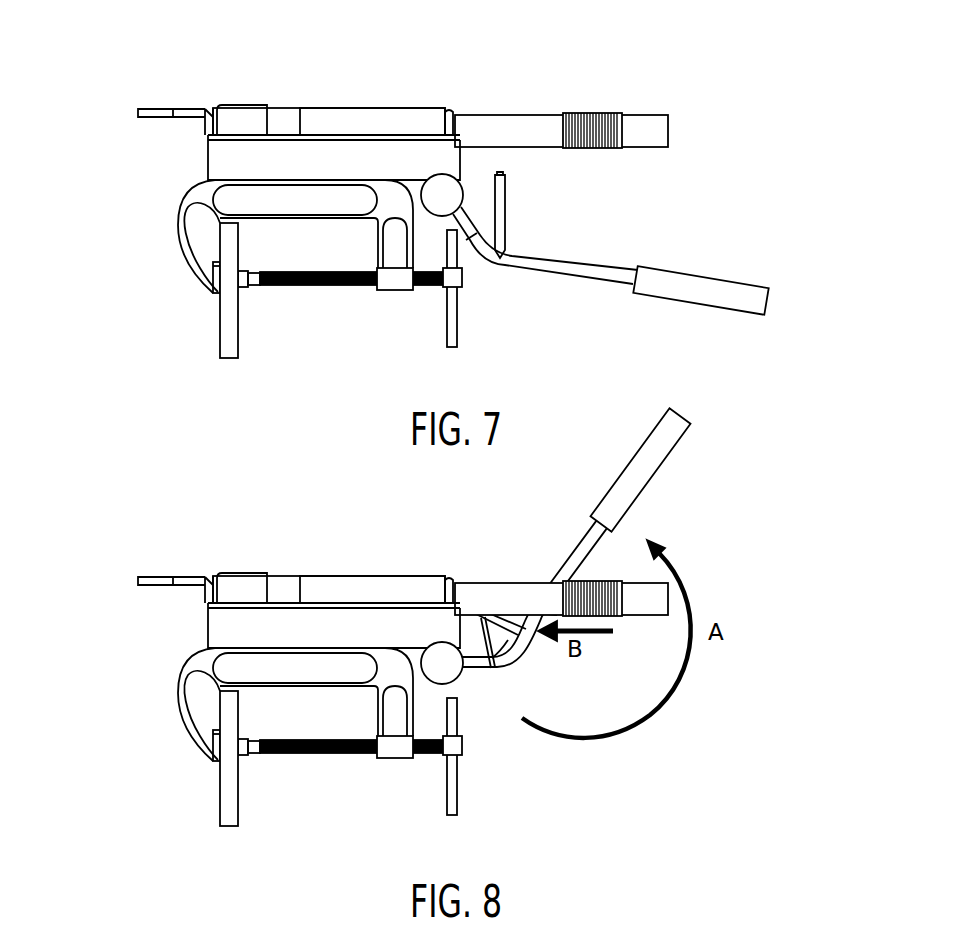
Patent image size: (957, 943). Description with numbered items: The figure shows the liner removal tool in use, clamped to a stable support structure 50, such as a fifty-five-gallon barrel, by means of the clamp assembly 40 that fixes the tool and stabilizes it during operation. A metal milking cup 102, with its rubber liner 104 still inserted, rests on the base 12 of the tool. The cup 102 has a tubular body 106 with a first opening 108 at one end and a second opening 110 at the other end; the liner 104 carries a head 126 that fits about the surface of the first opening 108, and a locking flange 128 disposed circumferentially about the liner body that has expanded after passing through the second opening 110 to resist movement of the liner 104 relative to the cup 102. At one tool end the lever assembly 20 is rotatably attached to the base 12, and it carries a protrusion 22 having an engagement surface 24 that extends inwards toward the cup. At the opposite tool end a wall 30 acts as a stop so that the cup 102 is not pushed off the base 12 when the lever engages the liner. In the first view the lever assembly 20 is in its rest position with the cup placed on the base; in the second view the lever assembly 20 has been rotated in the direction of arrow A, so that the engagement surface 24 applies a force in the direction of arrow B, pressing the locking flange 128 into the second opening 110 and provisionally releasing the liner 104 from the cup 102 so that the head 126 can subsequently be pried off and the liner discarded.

In FIG. 7, the base 12 is at (228, 157).
In FIG. 8, the base 12 is at (290, 641).
In FIG. 7, the lever assembly 20 is at (760, 270).
In FIG. 8, the lever assembly 20 is at (692, 480).
In FIG. 7, the protrusion 22 is at (507, 222).
In FIG. 8, the protrusion 22 is at (496, 661).
In FIG. 7, the engagement surface 24 is at (507, 177).
In FIG. 7, the wall 30 is at (210, 110).
In FIG. 8, the wall 30 is at (175, 549).
In FIG. 7, the clamp assembly 40 is at (380, 316).
In FIG. 8, the clamp assembly 40 is at (320, 759).
In FIG. 7, the support structure 50 is at (225, 354).
In FIG. 8, the support structure 50 is at (175, 767).
In FIG. 7, the milking cup 102 is at (418, 115).
In FIG. 8, the milking cup 102 is at (372, 558).
In FIG. 7, the rubber liner 104 is at (455, 115).
In FIG. 8, the rubber liner 104 is at (561, 572).
In FIG. 7, the tubular body 106 is at (355, 117).
In FIG. 8, the tubular body 106 is at (329, 589).
In FIG. 7, the first opening 108 is at (265, 115).
In FIG. 7, the second opening 110 is at (448, 110).
In FIG. 8, the second opening 110 is at (468, 532).
In FIG. 8, the head 126 is at (241, 542).
In FIG. 8, the locking flange 128 is at (505, 583).